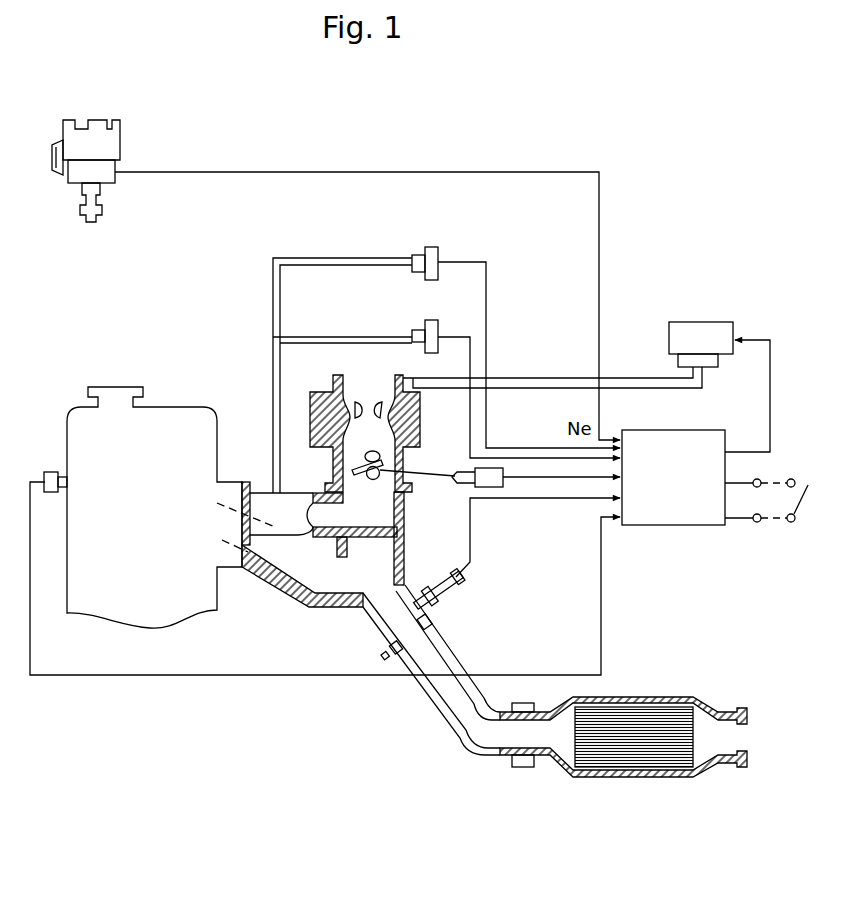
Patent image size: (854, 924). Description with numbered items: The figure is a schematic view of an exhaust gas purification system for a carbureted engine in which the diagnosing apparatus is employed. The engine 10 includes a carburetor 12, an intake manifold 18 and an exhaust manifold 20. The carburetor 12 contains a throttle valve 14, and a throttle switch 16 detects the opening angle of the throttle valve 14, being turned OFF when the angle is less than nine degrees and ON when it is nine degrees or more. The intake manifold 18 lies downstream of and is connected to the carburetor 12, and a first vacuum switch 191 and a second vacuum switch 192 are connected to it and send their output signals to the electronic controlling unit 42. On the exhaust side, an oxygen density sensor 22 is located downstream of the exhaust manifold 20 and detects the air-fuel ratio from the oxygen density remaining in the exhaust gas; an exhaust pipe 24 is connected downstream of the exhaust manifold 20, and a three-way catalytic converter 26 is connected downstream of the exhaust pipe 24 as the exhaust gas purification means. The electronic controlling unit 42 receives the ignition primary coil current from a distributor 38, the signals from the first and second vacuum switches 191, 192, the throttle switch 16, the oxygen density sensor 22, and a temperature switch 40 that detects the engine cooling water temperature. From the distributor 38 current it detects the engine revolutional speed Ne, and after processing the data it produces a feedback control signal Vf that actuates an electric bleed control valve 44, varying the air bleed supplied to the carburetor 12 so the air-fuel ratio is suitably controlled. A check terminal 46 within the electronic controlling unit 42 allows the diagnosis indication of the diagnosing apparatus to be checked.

The engine 10 is at (124, 384).
The carburetor 12 is at (318, 388).
The throttle valve 14 is at (383, 463).
The throttle switch 16 is at (477, 487).
The intake manifold 18 is at (263, 490).
The first vacuum switch 191 is at (440, 252).
The second vacuum switch 192 is at (440, 328).
The exhaust manifold 20 is at (302, 601).
The oxygen density sensor 22 is at (441, 593).
The exhaust pipe 24 is at (427, 704).
The three-way catalytic converter 26 is at (655, 697).
The distributor 38 is at (120, 138).
The temperature switch 40 is at (51, 471).
The electronic controlling unit 42 is at (657, 530).
The electric bleed control valve 44 is at (688, 321).
The check terminal 46 is at (752, 531).